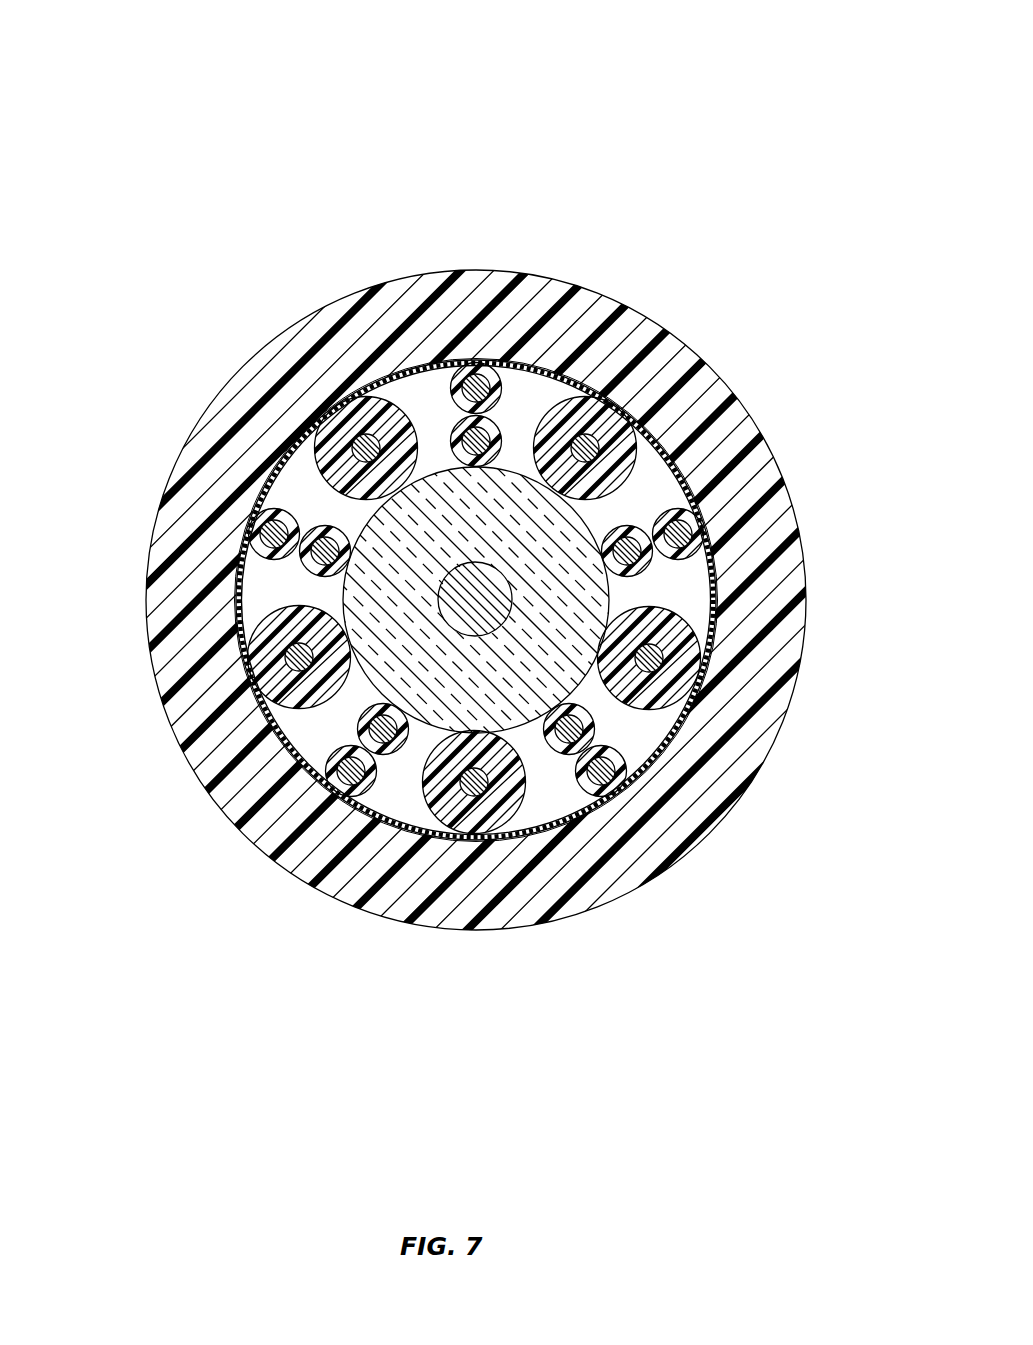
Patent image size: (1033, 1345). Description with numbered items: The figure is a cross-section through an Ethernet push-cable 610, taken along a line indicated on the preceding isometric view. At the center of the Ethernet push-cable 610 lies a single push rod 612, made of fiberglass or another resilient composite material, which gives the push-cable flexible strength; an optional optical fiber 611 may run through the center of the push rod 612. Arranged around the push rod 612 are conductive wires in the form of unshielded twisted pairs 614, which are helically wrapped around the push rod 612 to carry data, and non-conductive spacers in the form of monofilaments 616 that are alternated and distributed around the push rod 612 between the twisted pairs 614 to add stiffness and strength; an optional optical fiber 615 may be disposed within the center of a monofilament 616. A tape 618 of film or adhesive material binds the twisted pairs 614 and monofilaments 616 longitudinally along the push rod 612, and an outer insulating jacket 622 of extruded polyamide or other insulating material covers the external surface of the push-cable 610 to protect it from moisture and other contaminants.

The Ethernet push-cable 610 is at (193, 97).
The optical fiber 611 is at (497, 620).
The push rod 612 is at (500, 467).
The unshielded twisted pairs 614 is at (277, 463).
The optical fiber 615 is at (480, 790).
The monofilaments 616 is at (327, 407).
The tape 618 is at (397, 363).
The outer insulating jacket 622 is at (490, 283).